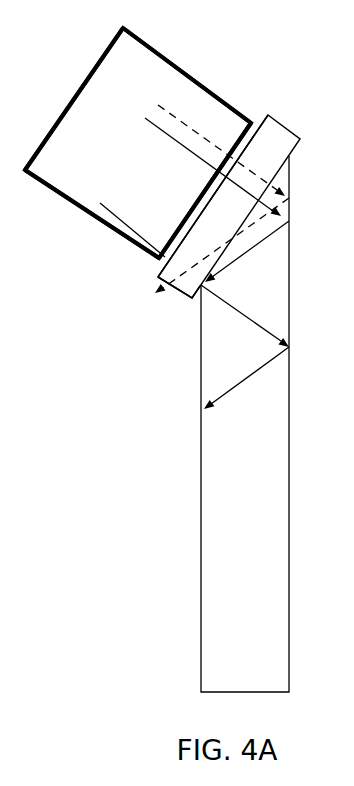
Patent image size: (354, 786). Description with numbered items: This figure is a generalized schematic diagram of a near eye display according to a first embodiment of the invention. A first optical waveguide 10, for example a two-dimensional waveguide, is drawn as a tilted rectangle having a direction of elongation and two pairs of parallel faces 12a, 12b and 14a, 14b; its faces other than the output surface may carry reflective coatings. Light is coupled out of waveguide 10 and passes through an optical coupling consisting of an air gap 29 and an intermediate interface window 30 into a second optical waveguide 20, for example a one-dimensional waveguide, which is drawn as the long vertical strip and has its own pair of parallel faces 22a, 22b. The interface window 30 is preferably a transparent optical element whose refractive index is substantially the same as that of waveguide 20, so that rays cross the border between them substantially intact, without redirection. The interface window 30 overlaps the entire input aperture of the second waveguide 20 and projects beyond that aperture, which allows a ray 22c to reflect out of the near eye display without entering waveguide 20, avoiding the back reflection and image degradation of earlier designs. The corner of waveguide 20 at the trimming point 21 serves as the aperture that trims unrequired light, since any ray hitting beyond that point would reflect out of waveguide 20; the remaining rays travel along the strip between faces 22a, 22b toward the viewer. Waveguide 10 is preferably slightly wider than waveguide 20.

The first optical waveguide 10 is at (138, 143).
The parallel face 12a is at (67, 83).
The parallel face 12b is at (165, 218).
The parallel face 14a is at (73, 222).
The parallel face 14b is at (229, 78).
The second optical waveguide 20 is at (245, 424).
The trimming point 21 is at (191, 314).
The parallel face 22a is at (165, 462).
The parallel face 22b is at (320, 322).
The ray 22c is at (206, 186).
The air gap 29 is at (265, 104).
The interface window 30 is at (229, 206).